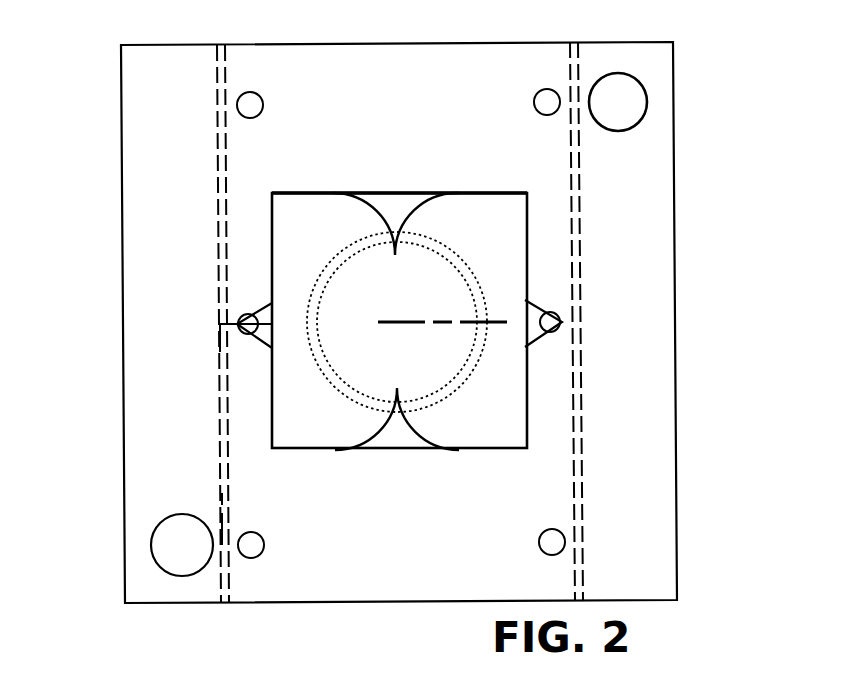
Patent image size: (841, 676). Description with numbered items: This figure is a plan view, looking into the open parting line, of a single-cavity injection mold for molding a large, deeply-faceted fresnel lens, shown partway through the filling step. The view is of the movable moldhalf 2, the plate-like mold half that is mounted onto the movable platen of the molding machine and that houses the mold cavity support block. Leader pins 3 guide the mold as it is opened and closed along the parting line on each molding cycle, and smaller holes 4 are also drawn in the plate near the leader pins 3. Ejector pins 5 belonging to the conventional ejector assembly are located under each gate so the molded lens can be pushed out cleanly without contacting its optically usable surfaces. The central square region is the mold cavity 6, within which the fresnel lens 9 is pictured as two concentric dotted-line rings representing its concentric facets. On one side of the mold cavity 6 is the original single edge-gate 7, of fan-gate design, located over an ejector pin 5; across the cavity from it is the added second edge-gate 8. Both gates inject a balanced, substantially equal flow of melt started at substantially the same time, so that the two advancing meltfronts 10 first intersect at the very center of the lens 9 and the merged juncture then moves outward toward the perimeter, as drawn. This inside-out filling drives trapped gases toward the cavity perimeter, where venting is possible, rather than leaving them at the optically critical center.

The movable moldhalf 2 is at (716, 28).
The leader pins 3 is at (638, 105).
The small mounting hole 4 is at (548, 100).
The ejector pins 5 is at (552, 322).
The square frame recess 6 is at (412, 193).
The first edge-gate 7 is at (527, 342).
The second edge-gate 8 is at (262, 308).
The circular aperture 9 is at (397, 300).
The meltfront 10 is at (378, 212).